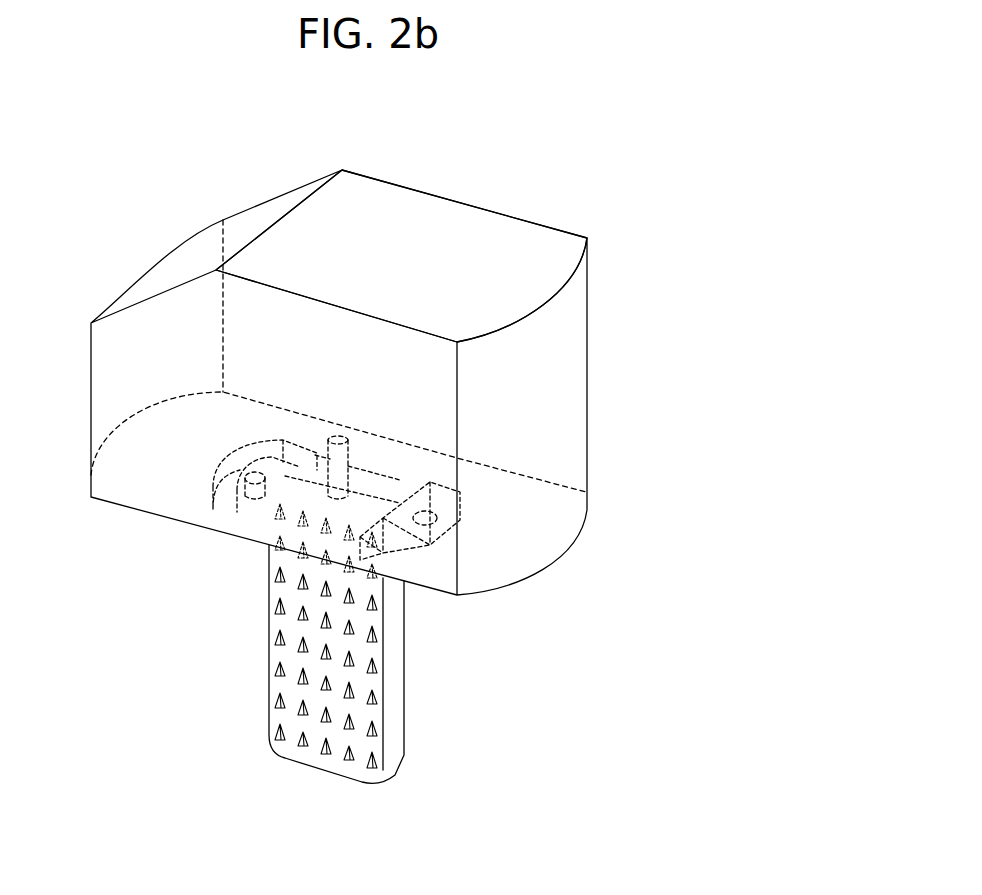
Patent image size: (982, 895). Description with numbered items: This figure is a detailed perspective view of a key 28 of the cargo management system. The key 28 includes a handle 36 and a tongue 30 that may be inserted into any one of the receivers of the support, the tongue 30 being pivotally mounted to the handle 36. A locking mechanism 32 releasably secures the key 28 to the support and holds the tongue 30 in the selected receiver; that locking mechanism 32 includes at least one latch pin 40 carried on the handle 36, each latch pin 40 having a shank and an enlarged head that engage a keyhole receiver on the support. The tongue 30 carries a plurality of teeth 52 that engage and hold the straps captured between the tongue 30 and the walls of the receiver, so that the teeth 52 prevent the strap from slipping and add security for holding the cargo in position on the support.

The key 28 is at (548, 192).
The tongue 30 is at (404, 694).
The locking mechanism 32 is at (198, 482).
The handle 36 is at (412, 203).
The latch pin 40 is at (262, 512).
The teeth 52 is at (280, 703).